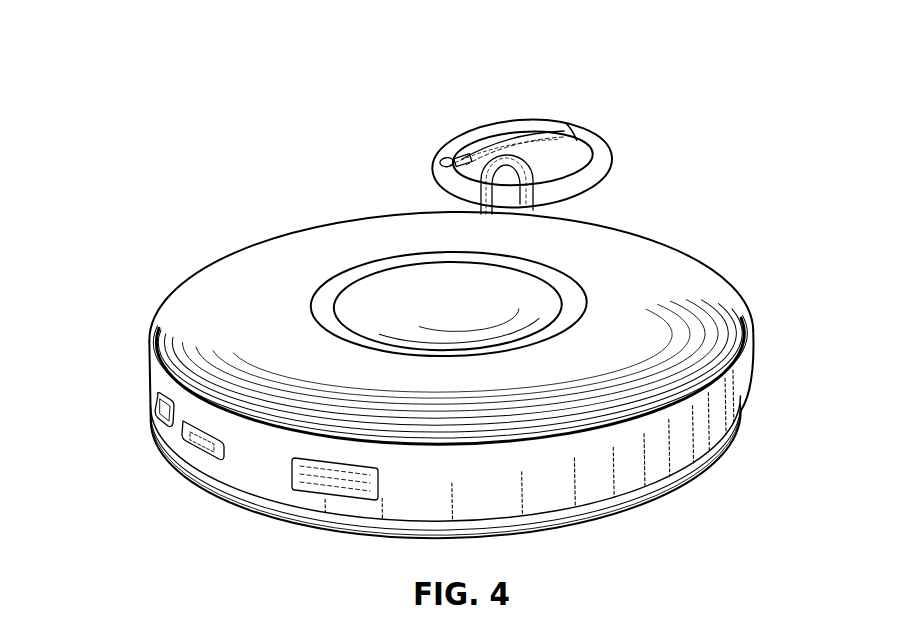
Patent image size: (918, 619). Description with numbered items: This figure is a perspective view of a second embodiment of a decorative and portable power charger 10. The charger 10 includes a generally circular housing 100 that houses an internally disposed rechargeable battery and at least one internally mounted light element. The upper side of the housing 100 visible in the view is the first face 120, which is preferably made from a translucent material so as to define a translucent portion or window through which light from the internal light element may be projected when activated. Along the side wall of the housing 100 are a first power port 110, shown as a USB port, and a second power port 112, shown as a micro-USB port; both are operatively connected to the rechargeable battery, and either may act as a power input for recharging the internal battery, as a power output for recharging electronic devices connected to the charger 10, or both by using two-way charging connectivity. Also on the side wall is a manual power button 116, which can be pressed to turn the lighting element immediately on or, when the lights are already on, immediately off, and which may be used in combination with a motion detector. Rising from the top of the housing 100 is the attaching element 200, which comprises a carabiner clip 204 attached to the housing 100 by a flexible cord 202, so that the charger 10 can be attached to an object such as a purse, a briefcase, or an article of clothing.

The decorative and portable power charger 10 is at (170, 87).
The housing 100 is at (757, 369).
The first power port 110 is at (306, 496).
The second power port 112 is at (185, 447).
The manual power button 116 is at (149, 402).
The first face 120 is at (707, 292).
The attaching element 200 is at (425, 159).
The flexible cord 202 is at (600, 187).
The carabiner clip 204 is at (578, 135).